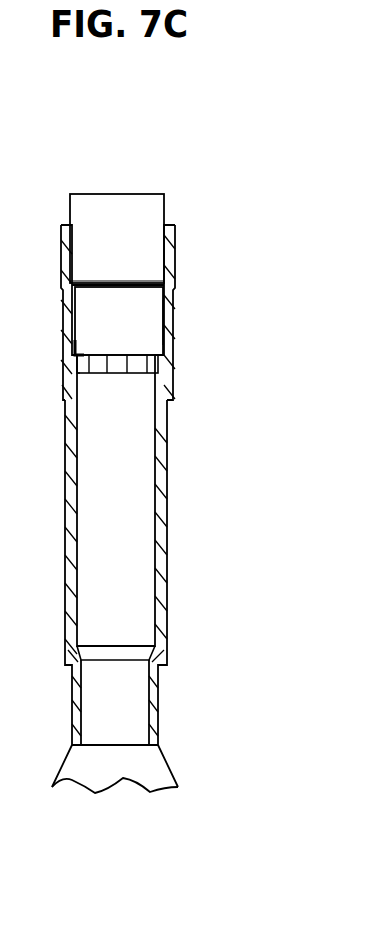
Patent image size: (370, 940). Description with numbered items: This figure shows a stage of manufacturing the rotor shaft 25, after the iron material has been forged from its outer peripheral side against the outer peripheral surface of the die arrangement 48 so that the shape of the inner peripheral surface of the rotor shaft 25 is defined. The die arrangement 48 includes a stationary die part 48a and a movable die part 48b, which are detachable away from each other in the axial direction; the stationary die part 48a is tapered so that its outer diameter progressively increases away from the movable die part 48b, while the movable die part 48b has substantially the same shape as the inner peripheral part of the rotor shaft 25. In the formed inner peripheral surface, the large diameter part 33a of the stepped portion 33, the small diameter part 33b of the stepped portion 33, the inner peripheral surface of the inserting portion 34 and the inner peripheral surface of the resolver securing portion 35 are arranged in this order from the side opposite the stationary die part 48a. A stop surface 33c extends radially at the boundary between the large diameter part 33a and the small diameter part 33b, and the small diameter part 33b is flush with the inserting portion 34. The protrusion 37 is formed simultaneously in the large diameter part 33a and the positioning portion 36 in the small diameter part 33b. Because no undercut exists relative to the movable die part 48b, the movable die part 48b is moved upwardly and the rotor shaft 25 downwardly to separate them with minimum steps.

The die arrangement 48 is at (125, 493).
The stationary die part 48a is at (63, 770).
The movable die part 48b is at (63, 258).
The stepped portion 33 is at (119, 345).
The large diameter part 33a is at (77, 293).
The small diameter part 33b is at (80, 378).
The stop surface 33c is at (167, 346).
The inserting portion 34 is at (66, 482).
The resolver securing portion 35 is at (72, 698).
The positioning portion 36 is at (118, 364).
The protrusion 37 is at (85, 346).
The rotor shaft 25 is at (168, 476).